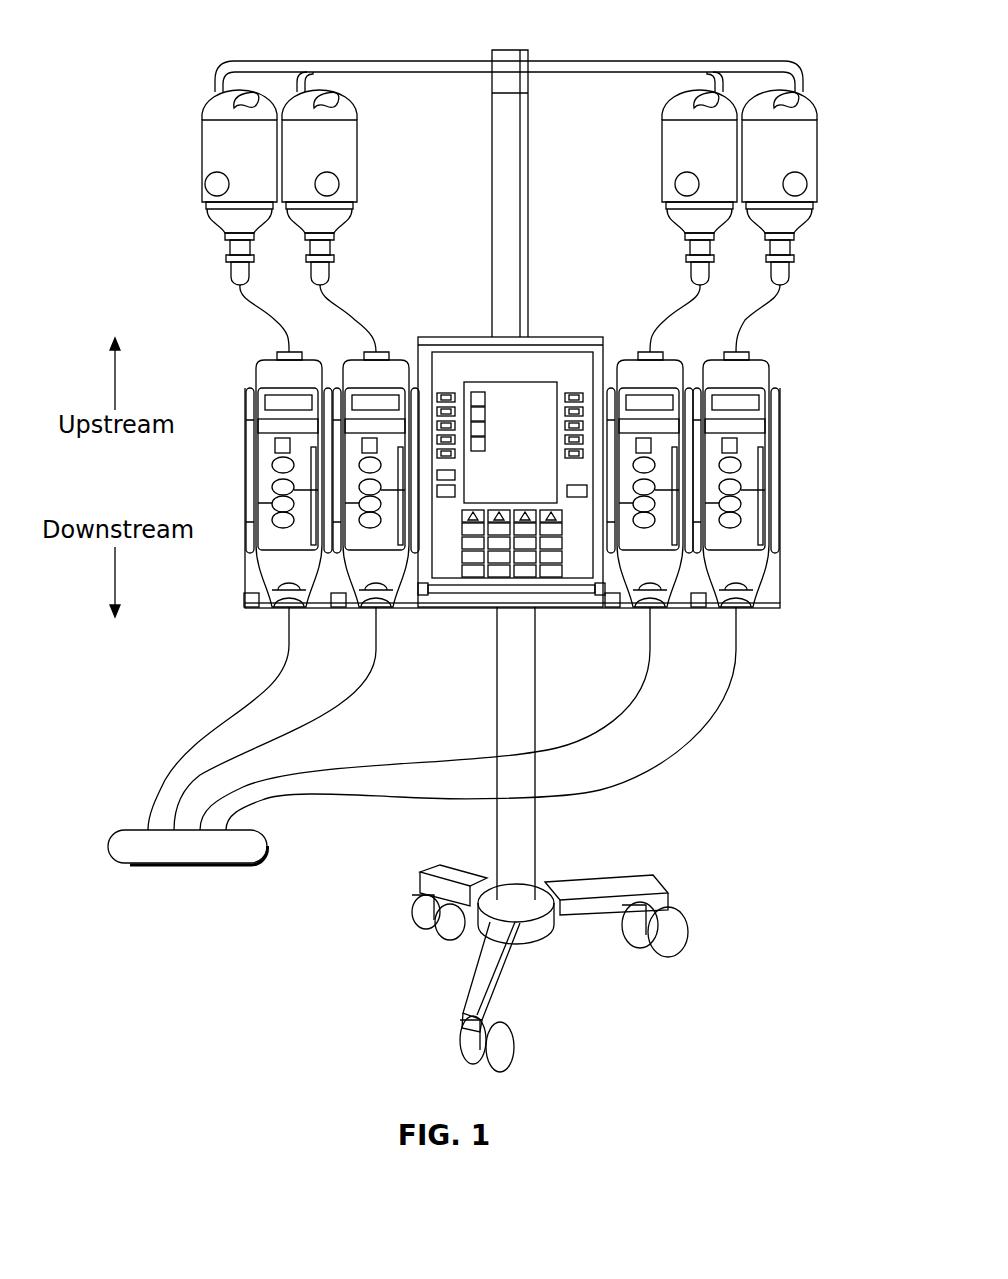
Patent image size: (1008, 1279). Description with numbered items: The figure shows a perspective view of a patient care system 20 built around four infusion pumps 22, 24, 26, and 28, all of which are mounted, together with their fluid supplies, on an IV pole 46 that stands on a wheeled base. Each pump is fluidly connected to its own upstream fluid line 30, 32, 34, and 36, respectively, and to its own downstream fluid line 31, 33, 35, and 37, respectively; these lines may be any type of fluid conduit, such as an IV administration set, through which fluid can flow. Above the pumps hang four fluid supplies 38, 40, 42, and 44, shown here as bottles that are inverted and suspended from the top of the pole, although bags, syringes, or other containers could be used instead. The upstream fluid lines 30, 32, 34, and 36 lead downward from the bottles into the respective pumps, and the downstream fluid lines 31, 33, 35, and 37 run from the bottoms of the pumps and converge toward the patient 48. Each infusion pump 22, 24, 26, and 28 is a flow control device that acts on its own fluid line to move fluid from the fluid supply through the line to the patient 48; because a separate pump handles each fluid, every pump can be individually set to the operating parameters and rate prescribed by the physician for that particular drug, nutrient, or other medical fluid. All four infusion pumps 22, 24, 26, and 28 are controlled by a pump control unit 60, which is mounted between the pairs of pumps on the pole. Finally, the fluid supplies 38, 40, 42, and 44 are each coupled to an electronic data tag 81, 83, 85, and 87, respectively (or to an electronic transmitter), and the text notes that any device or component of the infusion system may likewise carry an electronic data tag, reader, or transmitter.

The patient care system 20 is at (192, 45).
The infusion pump 22 is at (771, 366).
The infusion pump 24 is at (626, 362).
The infusion pump 26 is at (354, 364).
The infusion pump 28 is at (264, 364).
The upstream fluid line 30 is at (783, 300).
The downstream fluid line 31 is at (741, 652).
The upstream fluid line 32 is at (694, 302).
The downstream fluid line 33 is at (646, 656).
The upstream fluid line 34 is at (332, 306).
The downstream fluid line 35 is at (359, 690).
The upstream fluid line 36 is at (243, 300).
The downstream fluid line 37 is at (283, 672).
The fluid supply 38 is at (817, 150).
The fluid supply 40 is at (662, 150).
The fluid supply 42 is at (357, 150).
The fluid supply 44 is at (202, 150).
The IV pole 46 is at (537, 840).
The patient 48 is at (108, 847).
The pump control unit 60 is at (490, 340).
The electronic data tag 81 is at (807, 184).
The electronic data tag 83 is at (675, 184).
The electronic data tag 85 is at (339, 184).
The electronic data tag 87 is at (205, 184).